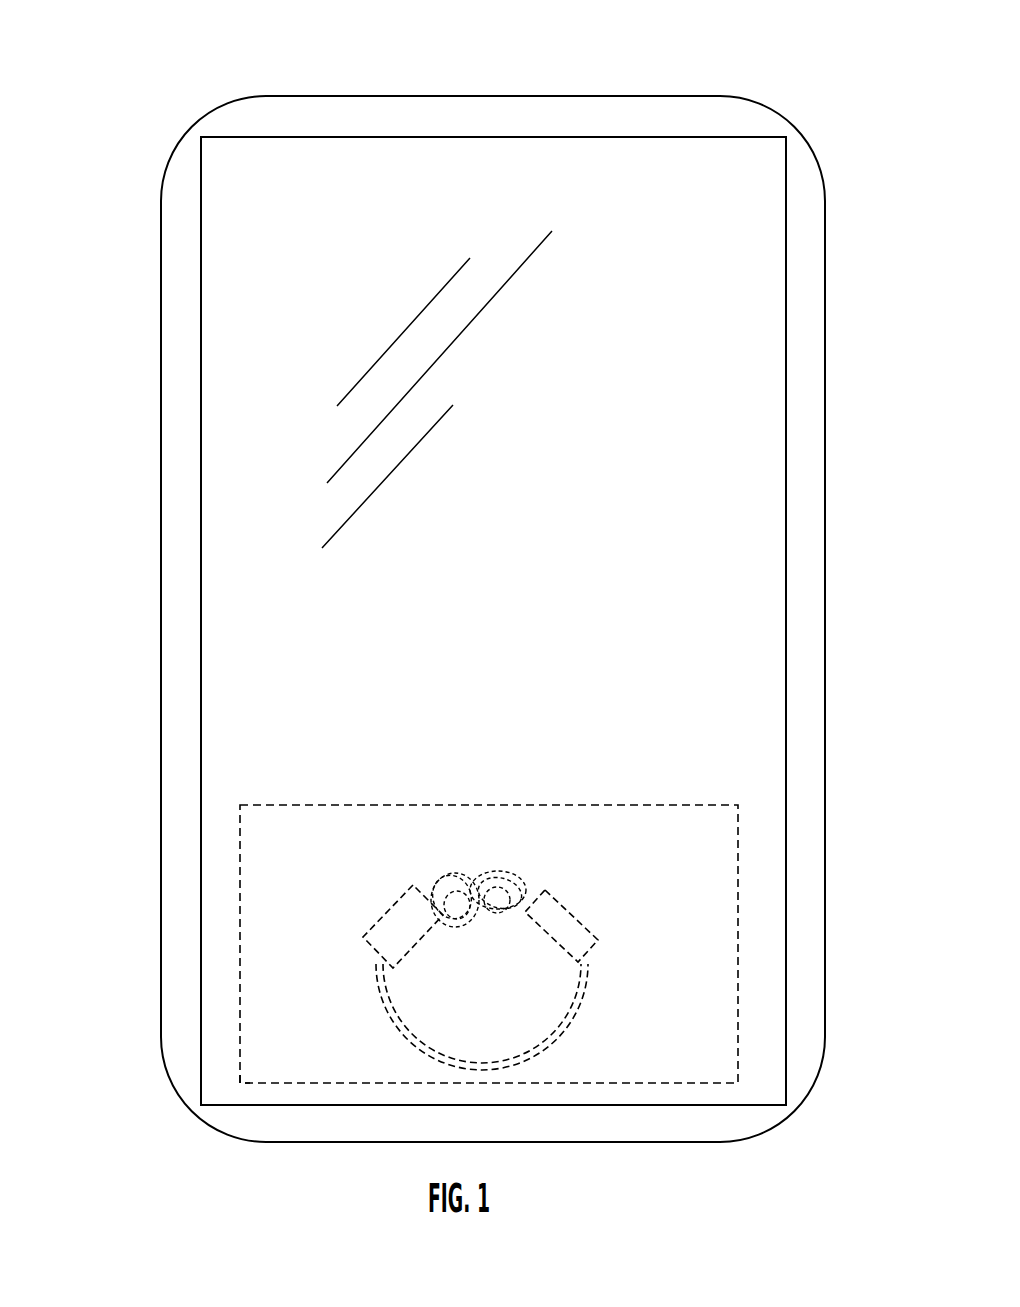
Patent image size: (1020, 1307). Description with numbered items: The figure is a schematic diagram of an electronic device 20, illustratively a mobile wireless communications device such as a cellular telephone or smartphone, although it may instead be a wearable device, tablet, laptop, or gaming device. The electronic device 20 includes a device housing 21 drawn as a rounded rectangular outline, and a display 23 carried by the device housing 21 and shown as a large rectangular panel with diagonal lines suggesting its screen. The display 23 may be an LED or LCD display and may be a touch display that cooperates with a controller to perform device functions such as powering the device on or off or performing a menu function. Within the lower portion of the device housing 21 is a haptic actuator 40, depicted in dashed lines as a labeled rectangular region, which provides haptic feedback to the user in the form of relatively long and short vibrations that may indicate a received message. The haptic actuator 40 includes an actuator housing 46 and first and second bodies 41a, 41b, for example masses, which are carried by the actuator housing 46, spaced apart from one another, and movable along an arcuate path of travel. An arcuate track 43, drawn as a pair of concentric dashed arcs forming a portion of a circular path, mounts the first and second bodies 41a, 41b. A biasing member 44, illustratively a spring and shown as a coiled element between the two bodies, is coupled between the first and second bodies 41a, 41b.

The electronic device 20 is at (127, 113).
The device housing 21 is at (162, 250).
The display 23 is at (292, 542).
The haptic actuator 40 is at (240, 831).
The first body 41a is at (390, 913).
The second body 41b is at (580, 922).
The arcuate track 43 is at (582, 1015).
The biasing member 44 is at (520, 876).
The actuator housing 46 is at (240, 1083).